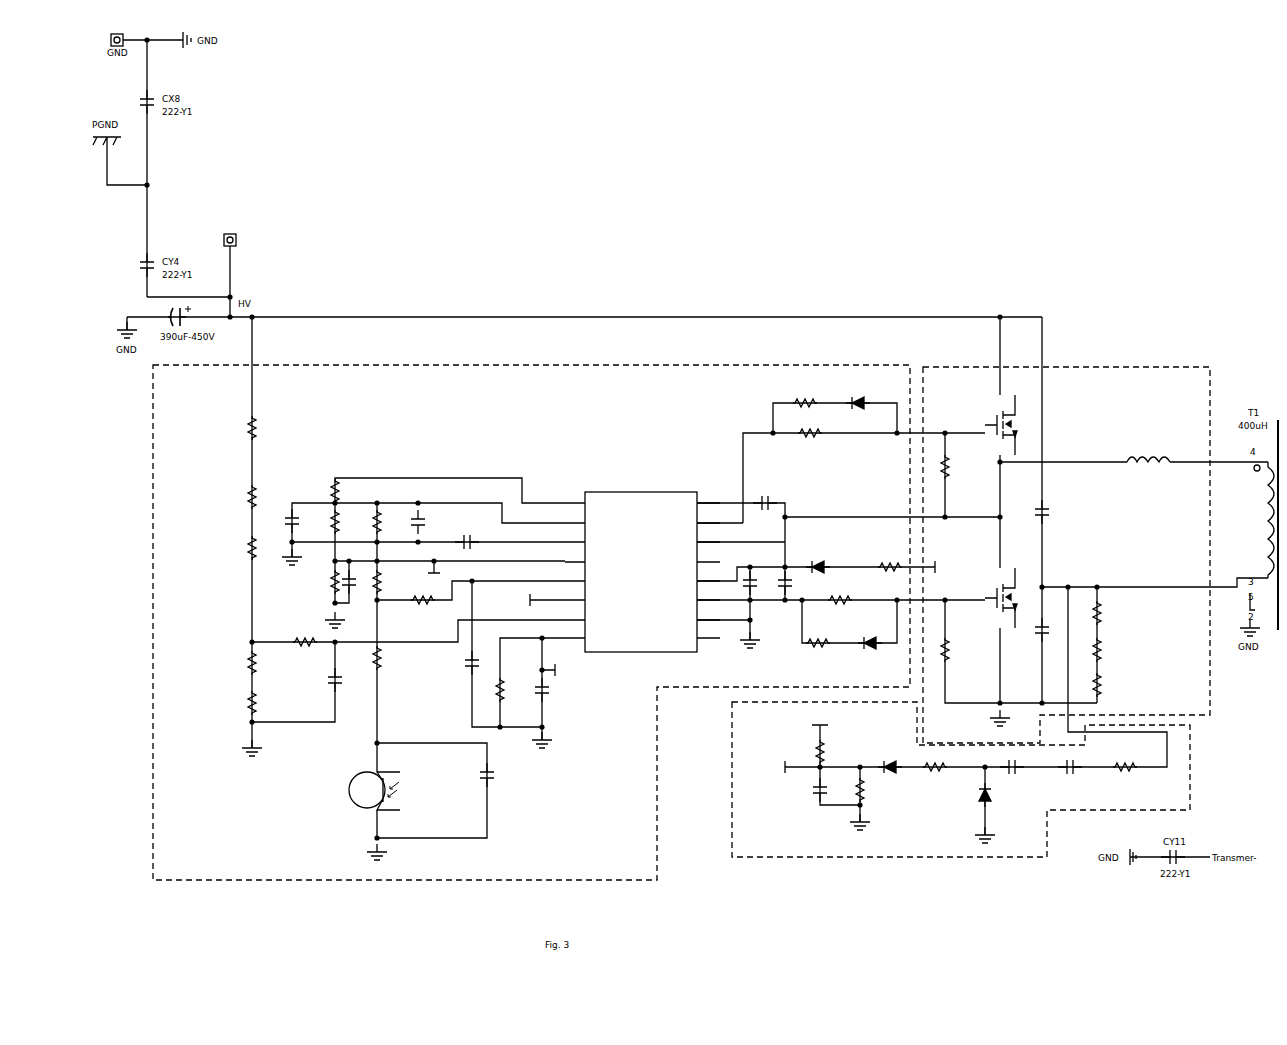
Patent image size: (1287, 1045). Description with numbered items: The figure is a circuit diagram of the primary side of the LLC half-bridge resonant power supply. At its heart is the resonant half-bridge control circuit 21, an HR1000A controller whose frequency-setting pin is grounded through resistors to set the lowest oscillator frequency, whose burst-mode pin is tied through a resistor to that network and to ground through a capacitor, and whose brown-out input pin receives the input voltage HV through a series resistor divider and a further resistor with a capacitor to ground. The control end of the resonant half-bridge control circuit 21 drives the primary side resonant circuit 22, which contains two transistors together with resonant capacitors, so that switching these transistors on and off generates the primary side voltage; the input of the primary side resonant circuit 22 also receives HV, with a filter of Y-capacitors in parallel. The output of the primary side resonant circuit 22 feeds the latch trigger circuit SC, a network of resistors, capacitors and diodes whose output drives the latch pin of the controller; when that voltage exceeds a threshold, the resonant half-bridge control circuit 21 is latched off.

The resonant half-bridge control circuit 21 is at (655, 366).
The primary side resonant circuit 22 is at (1055, 367).
The latch trigger circuit SC is at (1196, 752).